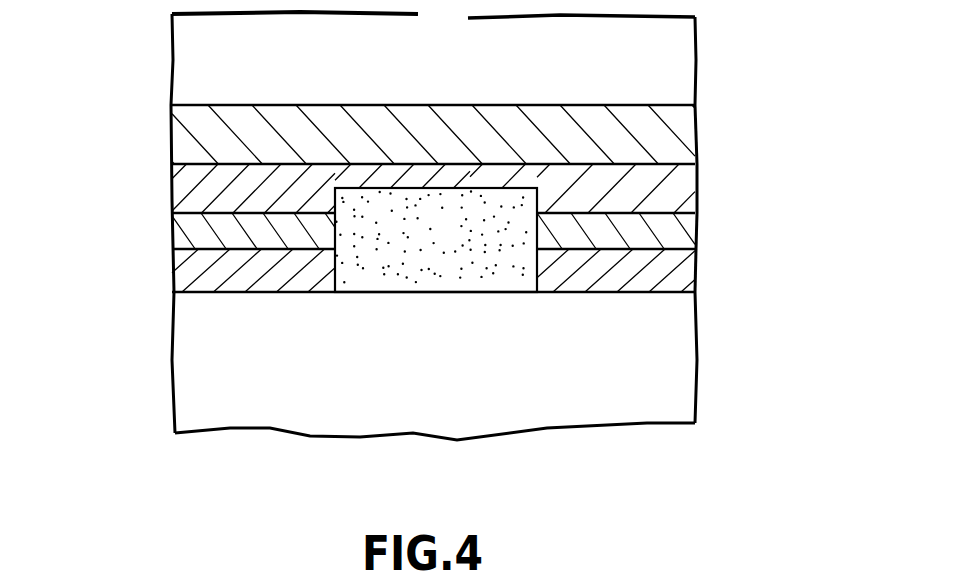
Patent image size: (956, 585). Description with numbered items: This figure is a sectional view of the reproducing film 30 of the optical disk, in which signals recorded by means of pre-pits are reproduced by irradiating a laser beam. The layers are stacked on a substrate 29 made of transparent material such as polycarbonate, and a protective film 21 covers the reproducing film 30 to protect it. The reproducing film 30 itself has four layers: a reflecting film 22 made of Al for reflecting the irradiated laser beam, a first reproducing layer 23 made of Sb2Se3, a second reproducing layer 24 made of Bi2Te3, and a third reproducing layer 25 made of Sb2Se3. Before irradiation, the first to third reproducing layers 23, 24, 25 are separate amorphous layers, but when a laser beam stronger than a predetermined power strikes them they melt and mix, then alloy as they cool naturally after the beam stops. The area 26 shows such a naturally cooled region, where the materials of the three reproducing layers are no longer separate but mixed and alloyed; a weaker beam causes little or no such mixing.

The protective film 21 is at (186, 58).
The reflecting film 22 is at (186, 135).
The first reproducing layer 23 is at (186, 187).
The second reproducing layer 24 is at (182, 233).
The third reproducing layer 25 is at (182, 269).
The area 26 is at (412, 292).
The substrate 29 is at (182, 363).
The reproducing film 30 is at (73, 124).